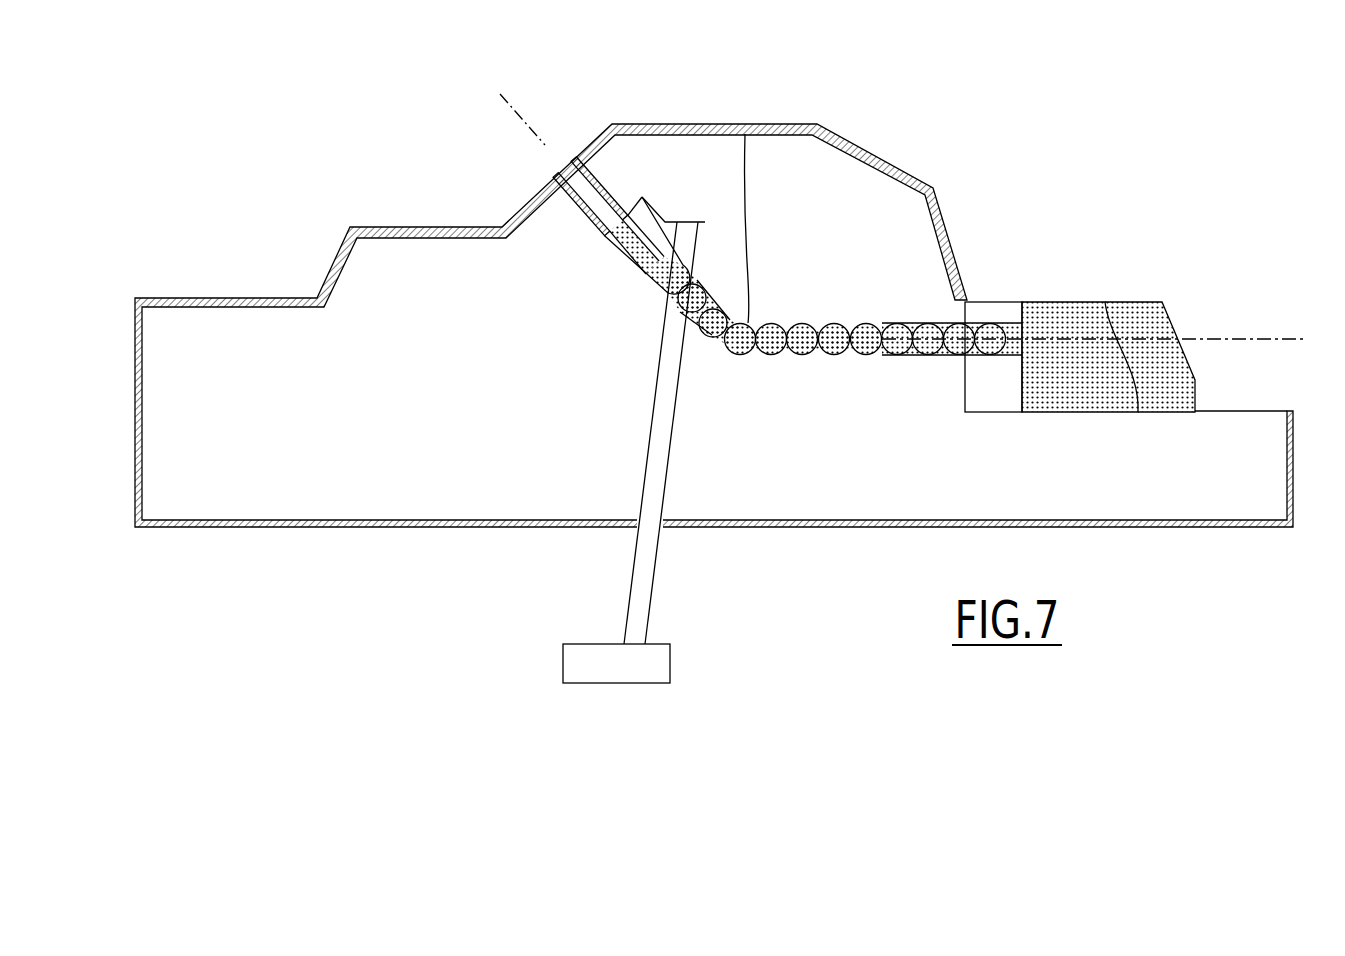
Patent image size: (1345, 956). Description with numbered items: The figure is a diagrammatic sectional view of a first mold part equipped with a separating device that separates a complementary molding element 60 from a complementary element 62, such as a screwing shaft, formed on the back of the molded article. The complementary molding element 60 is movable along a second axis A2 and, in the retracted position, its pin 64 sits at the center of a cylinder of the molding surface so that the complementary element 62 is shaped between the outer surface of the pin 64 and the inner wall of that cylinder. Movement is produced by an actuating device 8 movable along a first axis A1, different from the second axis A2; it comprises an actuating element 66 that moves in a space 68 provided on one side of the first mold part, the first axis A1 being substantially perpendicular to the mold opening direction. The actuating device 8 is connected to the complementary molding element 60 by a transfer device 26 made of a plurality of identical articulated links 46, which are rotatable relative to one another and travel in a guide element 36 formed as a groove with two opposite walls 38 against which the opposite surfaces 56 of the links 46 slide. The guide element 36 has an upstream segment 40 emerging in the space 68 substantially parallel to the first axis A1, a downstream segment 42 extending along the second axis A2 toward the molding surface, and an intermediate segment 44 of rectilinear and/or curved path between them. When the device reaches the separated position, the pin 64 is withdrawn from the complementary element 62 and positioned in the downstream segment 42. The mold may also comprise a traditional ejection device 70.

The actuating device 8 is at (1080, 322).
The transfer device 26 is at (775, 323).
The guide element 36 is at (724, 352).
The opposite walls 38 is at (807, 323).
The upstream segment 40 is at (887, 323).
The downstream segment 42 is at (672, 305).
The intermediate segment 44 is at (758, 323).
The articulated links 46 is at (772, 355).
The opposite surfaces 56 is at (705, 222).
The complementary molding element 60 is at (633, 243).
The complementary element 62 is at (582, 211).
The pin 64 is at (608, 185).
The actuating element 66 is at (992, 318).
The space 68 is at (1178, 317).
The ejection device 70 is at (657, 459).
The first axis A1 is at (1270, 339).
The second axis A2 is at (537, 98).